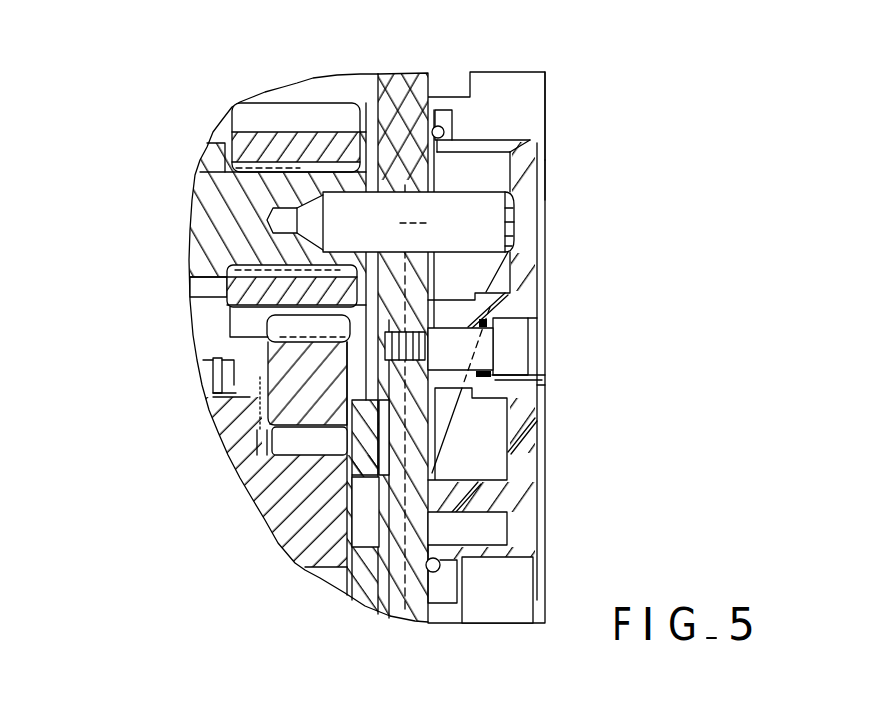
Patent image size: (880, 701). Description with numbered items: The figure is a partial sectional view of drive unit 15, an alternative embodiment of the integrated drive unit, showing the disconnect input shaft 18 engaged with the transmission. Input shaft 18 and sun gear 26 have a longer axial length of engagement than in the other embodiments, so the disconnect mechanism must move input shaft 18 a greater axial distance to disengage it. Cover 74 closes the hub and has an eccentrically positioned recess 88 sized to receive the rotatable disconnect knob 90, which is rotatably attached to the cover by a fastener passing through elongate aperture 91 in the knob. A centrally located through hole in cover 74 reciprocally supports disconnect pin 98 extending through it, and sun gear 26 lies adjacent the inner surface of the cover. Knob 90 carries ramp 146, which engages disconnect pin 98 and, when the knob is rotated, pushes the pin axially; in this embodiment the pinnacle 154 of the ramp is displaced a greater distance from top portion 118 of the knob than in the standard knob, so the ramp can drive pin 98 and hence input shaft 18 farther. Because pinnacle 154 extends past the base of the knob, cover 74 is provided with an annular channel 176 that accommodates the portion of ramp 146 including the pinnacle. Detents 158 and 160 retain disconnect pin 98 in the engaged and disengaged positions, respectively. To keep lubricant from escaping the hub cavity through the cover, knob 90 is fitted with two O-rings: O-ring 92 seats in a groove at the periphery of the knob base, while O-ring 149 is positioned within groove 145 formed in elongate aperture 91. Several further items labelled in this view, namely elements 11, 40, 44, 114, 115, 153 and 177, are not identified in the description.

The coupling assembly 11 is at (563, 327).
The drive unit 15 is at (580, 160).
The input shaft 18 is at (217, 232).
The sun gear 26 is at (327, 113).
The end cap 40 is at (533, 107).
The seal 44 is at (400, 368).
The cover 74 is at (495, 73).
The recess 88 is at (458, 603).
The disconnect knob 90 is at (545, 140).
The aperture 91 is at (445, 328).
The O-ring 92 is at (452, 125).
The disconnect pin 98 is at (513, 232).
The upper bearing block 114 is at (277, 175).
The bolt end 115 is at (508, 246).
The top portion 118 is at (540, 392).
The groove 145 is at (520, 387).
The ramp 146 is at (444, 420).
The O-ring 149 is at (483, 370).
The shoulder 153 is at (427, 312).
The pinnacle 154 is at (432, 472).
The detent 158 is at (470, 518).
The detent 160 is at (513, 203).
The annular channel 176 is at (443, 460).
The pin retainer 177 is at (443, 117).